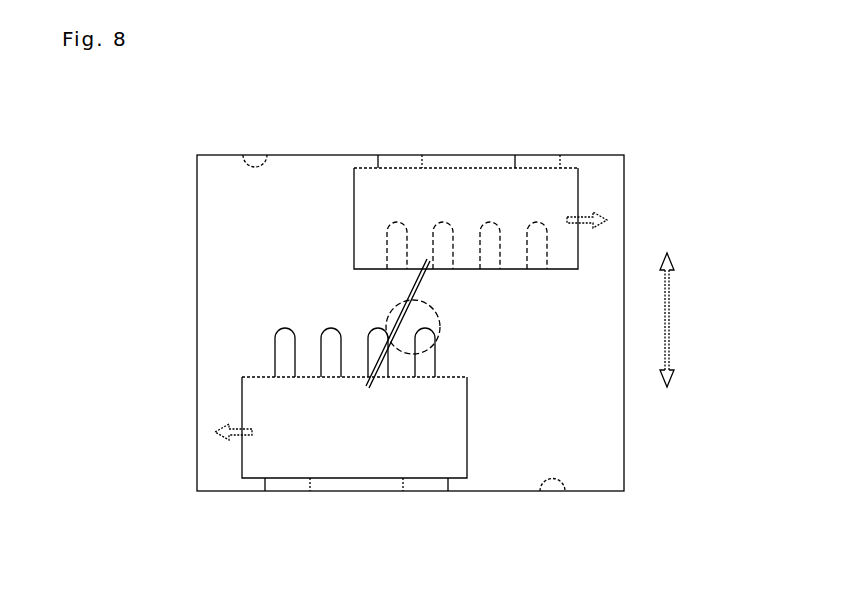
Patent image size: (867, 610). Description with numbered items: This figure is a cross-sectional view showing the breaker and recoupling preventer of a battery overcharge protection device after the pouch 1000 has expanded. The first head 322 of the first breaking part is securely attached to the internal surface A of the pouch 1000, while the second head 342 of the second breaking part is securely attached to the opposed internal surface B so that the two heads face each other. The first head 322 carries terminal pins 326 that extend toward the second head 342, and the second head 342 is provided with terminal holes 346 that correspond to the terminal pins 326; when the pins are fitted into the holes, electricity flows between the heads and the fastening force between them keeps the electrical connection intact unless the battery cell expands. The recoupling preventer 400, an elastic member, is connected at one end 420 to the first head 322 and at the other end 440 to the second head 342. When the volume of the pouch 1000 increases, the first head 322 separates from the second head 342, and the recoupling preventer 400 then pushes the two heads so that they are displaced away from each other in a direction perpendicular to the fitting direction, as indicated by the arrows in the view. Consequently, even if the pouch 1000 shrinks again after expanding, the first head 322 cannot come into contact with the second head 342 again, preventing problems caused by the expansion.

The pouch 1000 is at (624, 185).
The second head 342 is at (459, 182).
The terminal holes 346 is at (535, 218).
The other end of recoupling preventer 440 is at (426, 257).
The recoupling preventer 400 is at (378, 310).
The terminal pins 326 is at (272, 343).
The first head 322 is at (282, 462).
The one end of recoupling preventer 420 is at (380, 355).
The internal surface A is at (563, 491).
The opposed internal surface B is at (266, 155).